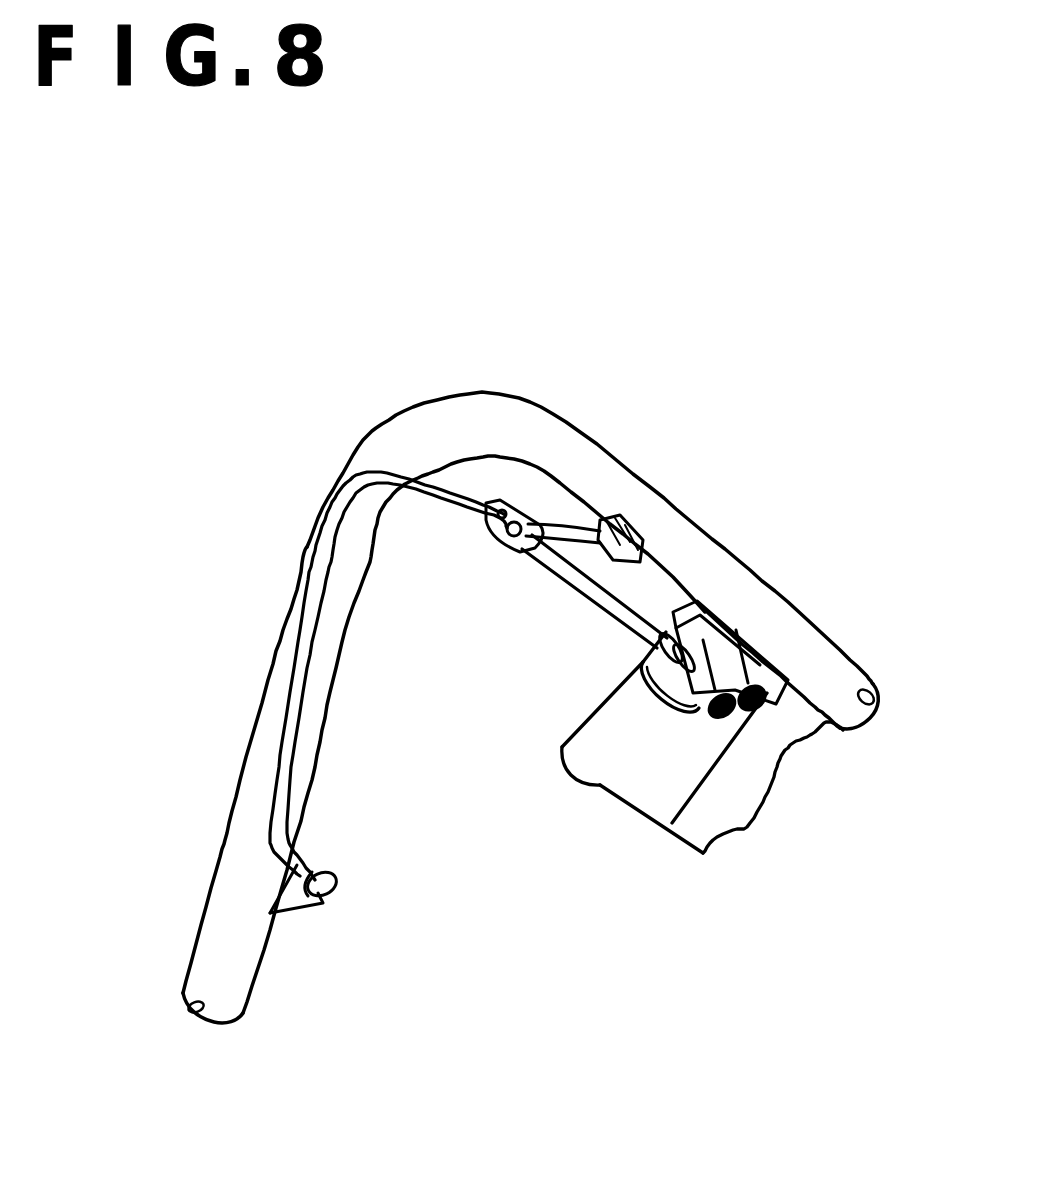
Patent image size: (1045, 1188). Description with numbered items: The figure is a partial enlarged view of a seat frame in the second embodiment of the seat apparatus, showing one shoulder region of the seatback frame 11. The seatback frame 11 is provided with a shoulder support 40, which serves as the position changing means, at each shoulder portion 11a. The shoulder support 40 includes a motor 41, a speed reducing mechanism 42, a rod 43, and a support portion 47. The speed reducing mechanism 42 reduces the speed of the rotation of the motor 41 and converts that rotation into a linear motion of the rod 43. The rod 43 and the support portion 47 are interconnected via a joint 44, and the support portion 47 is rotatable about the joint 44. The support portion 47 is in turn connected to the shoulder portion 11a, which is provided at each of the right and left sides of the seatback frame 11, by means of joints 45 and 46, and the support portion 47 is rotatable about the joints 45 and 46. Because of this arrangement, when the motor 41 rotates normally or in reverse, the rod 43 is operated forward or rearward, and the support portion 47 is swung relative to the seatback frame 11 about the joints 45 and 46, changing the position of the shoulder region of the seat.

The seatback frame 11 is at (530, 619).
The shoulder portion 11a is at (537, 405).
The shoulder support 40 is at (746, 789).
The motor 41 is at (617, 753).
The speed reducing mechanism 42 is at (743, 648).
The rod 43 is at (595, 592).
The joint 44 is at (512, 520).
The joint 45 is at (625, 537).
The joint 46 is at (336, 884).
The support portion 47 is at (318, 605).